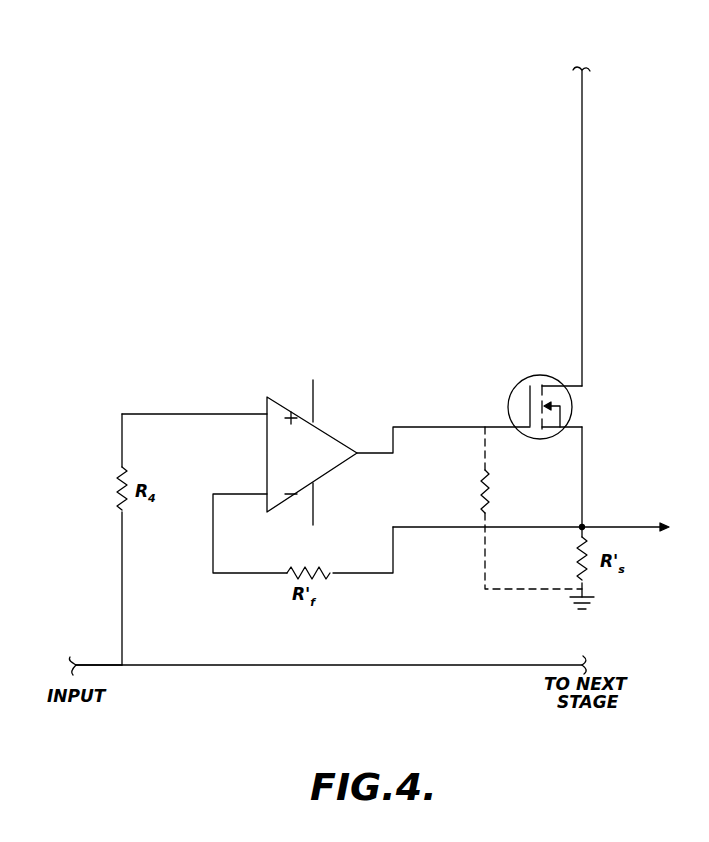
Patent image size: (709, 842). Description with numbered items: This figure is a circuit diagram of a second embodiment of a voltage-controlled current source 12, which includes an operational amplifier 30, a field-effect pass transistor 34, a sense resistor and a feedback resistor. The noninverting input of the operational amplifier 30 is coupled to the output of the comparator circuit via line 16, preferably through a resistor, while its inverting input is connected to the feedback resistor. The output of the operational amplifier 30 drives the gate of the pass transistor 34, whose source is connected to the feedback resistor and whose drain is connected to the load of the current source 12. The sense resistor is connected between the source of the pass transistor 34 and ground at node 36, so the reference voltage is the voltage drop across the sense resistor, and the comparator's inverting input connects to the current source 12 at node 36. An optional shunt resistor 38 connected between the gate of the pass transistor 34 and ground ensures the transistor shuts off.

The current source 12 is at (251, 121).
The line 16 is at (95, 665).
The operational amplifier 30 is at (267, 412).
The field-effect pass transistor 34 is at (522, 382).
The node 36 is at (582, 527).
The shunt resistor 38 is at (482, 487).